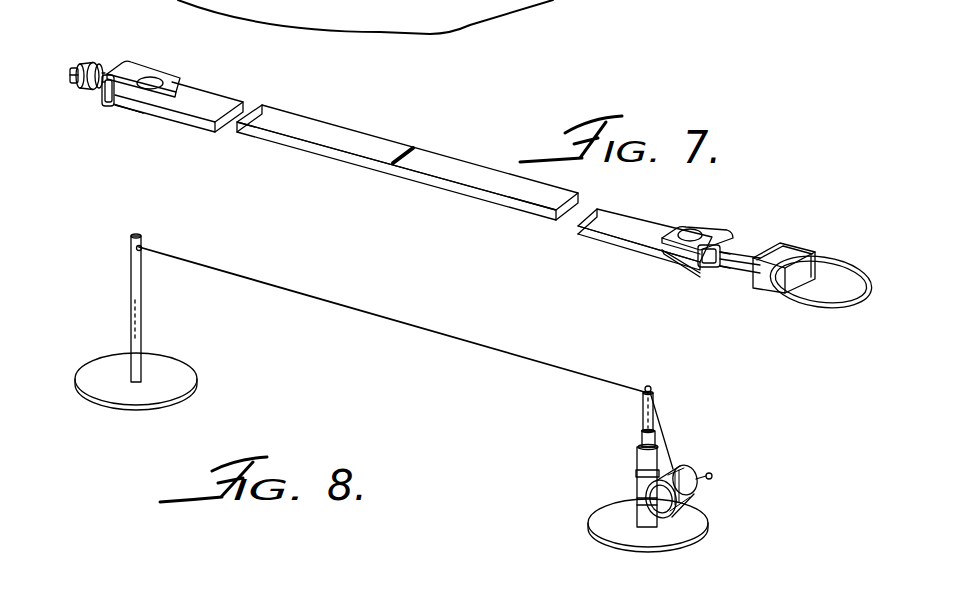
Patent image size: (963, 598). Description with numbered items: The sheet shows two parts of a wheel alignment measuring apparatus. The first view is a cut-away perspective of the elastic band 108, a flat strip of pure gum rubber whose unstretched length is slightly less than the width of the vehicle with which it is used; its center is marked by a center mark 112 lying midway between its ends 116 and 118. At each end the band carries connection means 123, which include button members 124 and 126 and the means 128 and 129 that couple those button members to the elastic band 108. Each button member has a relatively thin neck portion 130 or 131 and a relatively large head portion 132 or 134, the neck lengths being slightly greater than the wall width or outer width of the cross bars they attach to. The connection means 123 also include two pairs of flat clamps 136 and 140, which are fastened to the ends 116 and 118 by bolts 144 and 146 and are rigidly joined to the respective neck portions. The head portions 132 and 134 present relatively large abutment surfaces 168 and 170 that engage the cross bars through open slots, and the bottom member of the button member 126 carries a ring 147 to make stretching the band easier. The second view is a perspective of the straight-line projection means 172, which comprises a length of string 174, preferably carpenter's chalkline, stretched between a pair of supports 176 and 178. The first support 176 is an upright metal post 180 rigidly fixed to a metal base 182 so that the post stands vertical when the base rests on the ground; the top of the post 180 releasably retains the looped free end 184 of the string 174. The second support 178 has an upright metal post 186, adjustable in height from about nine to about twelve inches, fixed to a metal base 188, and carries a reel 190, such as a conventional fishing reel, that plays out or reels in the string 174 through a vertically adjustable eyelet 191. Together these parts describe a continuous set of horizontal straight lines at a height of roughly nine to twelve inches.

In FIG. 7, the elastic band 108 is at (215, 128).
In FIG. 7, the center mark 112 is at (400, 157).
In FIG. 7, the end of elastic band 116 is at (125, 108).
In FIG. 7, the end of elastic band 118 is at (687, 260).
In FIG. 7, the connection means 123 is at (153, 50).
In FIG. 7, the button member 124 is at (85, 84).
In FIG. 7, the button member 126 is at (806, 233).
In FIG. 7, the coupling means (neck portion) 128 is at (178, 80).
In FIG. 7, the coupling means 129 is at (660, 241).
In FIG. 7, the neck portion 130 is at (126, 24).
In FIG. 7, the neck portion 131 is at (742, 252).
In FIG. 7, the head portion 132 is at (96, 60).
In FIG. 7, the head portion 134 is at (800, 254).
In FIG. 7, the flat clamp 136 is at (142, 114).
In FIG. 7, the flat clamp 140 is at (692, 278).
In FIG. 7, the bolt 144 is at (158, 79).
In FIG. 7, the bolt 146 is at (694, 228).
In FIG. 7, the ring 147 is at (838, 307).
In FIG. 7, the abutment surface 168 is at (102, 97).
In FIG. 7, the abutment surface 170 is at (755, 277).
In FIG. 8, the straight-line projection means 172 is at (337, 298).
In FIG. 8, the string 174 is at (441, 333).
In FIG. 8, the first support 176 is at (122, 336).
In FIG. 8, the second support 178 is at (608, 484).
In FIG. 8, the post 180 is at (141, 324).
In FIG. 8, the base 182 is at (193, 380).
In FIG. 8, the free end of string 184 is at (142, 250).
In FIG. 8, the post 186 is at (643, 457).
In FIG. 8, the base 188 is at (590, 520).
In FIG. 8, the reel 190 is at (693, 480).
In FIG. 8, the eyelet 191 is at (653, 388).